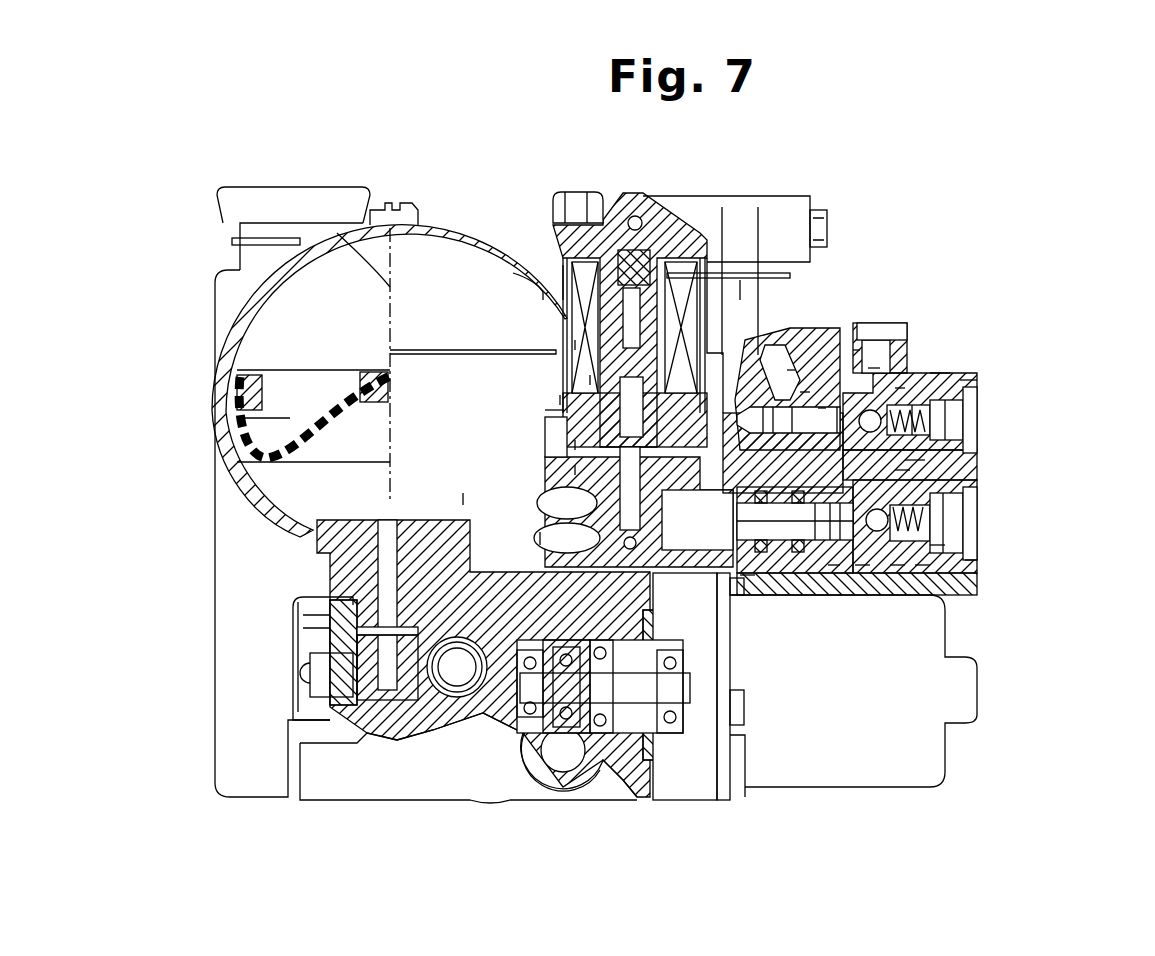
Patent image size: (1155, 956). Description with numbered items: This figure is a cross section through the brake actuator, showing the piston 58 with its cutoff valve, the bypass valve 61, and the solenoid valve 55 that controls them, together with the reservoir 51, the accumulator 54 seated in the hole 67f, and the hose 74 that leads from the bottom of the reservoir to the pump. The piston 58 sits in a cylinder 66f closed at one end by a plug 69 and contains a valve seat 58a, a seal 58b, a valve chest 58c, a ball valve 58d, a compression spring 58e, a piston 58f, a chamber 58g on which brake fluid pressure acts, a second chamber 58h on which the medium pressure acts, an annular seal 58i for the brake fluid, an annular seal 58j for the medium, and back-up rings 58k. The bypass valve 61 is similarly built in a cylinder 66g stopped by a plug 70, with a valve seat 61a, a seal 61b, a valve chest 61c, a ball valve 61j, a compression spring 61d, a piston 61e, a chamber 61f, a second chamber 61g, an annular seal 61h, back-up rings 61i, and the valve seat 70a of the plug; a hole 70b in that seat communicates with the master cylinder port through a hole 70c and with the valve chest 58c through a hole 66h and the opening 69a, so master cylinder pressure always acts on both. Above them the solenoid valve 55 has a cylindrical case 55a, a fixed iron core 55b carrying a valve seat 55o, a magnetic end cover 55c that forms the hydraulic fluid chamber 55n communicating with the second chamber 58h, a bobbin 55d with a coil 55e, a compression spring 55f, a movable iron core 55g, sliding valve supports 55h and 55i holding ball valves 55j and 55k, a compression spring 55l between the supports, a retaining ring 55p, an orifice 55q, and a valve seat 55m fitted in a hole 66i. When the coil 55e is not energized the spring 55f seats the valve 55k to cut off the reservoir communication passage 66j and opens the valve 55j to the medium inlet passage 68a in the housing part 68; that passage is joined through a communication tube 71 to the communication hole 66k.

The reservoir 51 is at (230, 545).
The accumulator 54 is at (243, 300).
The solenoid valve 55 is at (538, 247).
The cylindrical case 55a is at (567, 252).
The fixed iron core 55b is at (585, 280).
The second end cover 55c is at (565, 395).
The bobbin 55d is at (590, 380).
The coil 55e is at (563, 265).
The compression spring 55f is at (577, 440).
The movable iron core 55g is at (548, 432).
The valve support 55h is at (555, 351).
The valve support 55i is at (583, 407).
The ball valve 55j is at (575, 345).
The ball valve 55k is at (463, 500).
The compression spring 55l is at (742, 292).
The valve seat 55m is at (470, 533).
The hydraulic fluid chamber 55n is at (577, 467).
The valve seat 55o is at (583, 222).
The retaining ring 55p is at (697, 520).
The orifice 55q is at (650, 240).
The piston 58 is at (860, 565).
The valve seat 58a is at (858, 565).
The seal 58b is at (895, 565).
The valve chest 58c is at (943, 530).
The ball valve 58d is at (945, 550).
The compression spring 58e is at (970, 565).
The piston 58f is at (832, 565).
The chamber 58g is at (920, 565).
The second chamber 58h is at (680, 540).
The annular seal 58i is at (870, 545).
The annular seal 58j is at (815, 545).
The back-up rings 58k is at (843, 545).
The bypass valve 61 is at (890, 395).
The valve seat 61a is at (905, 378).
The seal 61b is at (873, 372).
The valve chest 61c is at (900, 392).
The compression spring 61d is at (945, 428).
The piston 61e is at (822, 412).
The chamber 61f is at (858, 355).
The second chamber 61g is at (700, 440).
The annular seal 61h is at (805, 395).
The back-up rings 61i is at (790, 372).
The ball valve 61j is at (940, 374).
The cylinder 66f is at (765, 540).
The cylinder 66g is at (965, 385).
The hole 66h is at (900, 465).
The hole 66i is at (540, 540).
The reservoir communication passage 66j is at (577, 585).
The communication hole 66k is at (748, 395).
The hole 67f is at (355, 637).
The housing part 68 is at (800, 230).
The medium inlet passage 68a is at (640, 218).
The plug 69 is at (980, 577).
The opening 69a is at (912, 513).
The plug 70 is at (975, 408).
The valve seat 70a is at (915, 465).
The hole 70b is at (975, 440).
The hole 70c is at (912, 413).
The communication tube 71 is at (745, 250).
The hose 74 is at (463, 775).